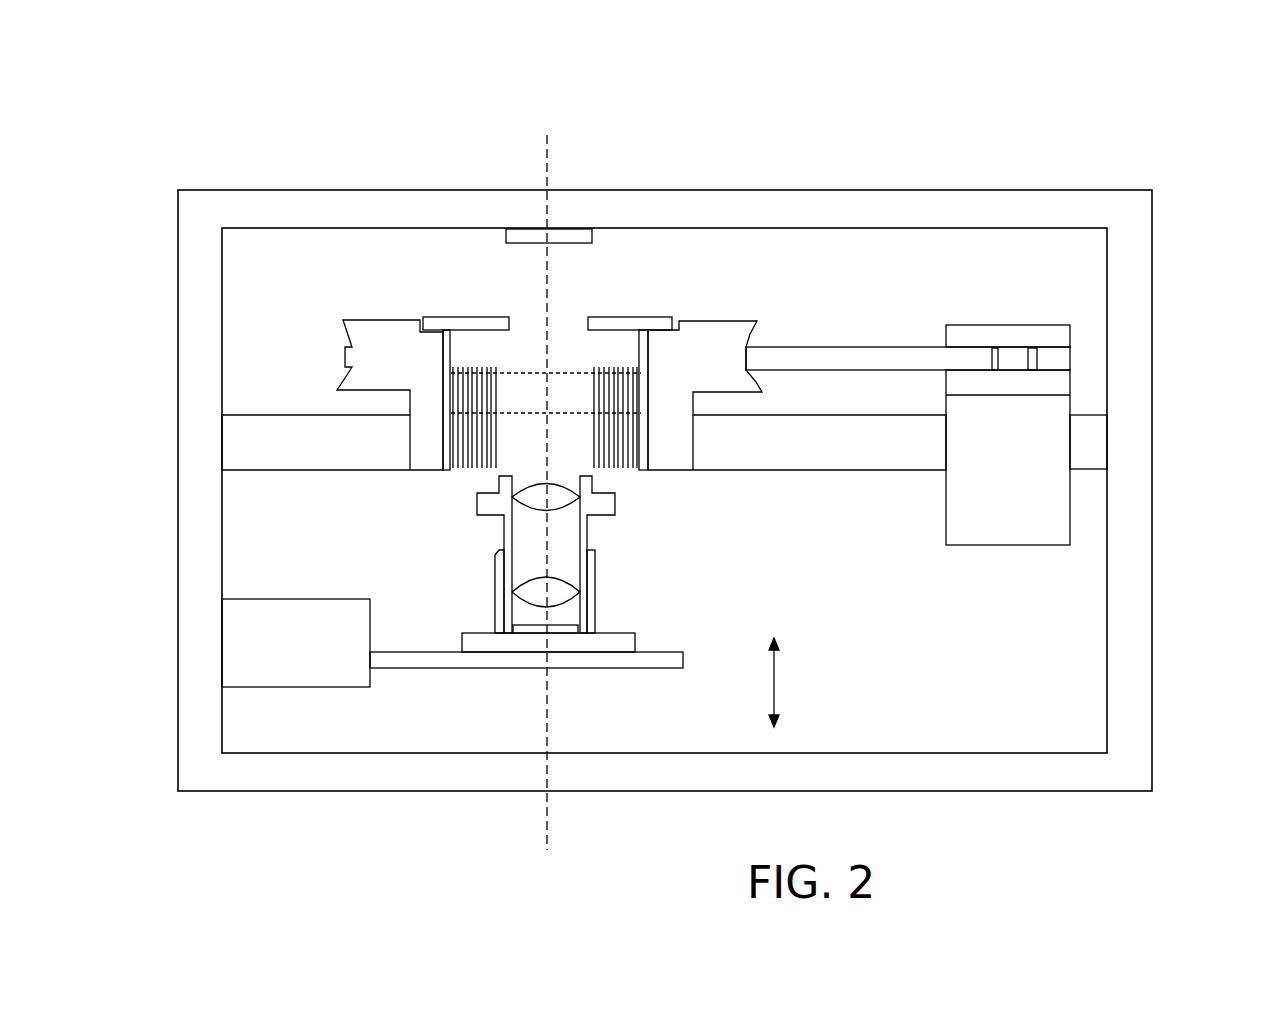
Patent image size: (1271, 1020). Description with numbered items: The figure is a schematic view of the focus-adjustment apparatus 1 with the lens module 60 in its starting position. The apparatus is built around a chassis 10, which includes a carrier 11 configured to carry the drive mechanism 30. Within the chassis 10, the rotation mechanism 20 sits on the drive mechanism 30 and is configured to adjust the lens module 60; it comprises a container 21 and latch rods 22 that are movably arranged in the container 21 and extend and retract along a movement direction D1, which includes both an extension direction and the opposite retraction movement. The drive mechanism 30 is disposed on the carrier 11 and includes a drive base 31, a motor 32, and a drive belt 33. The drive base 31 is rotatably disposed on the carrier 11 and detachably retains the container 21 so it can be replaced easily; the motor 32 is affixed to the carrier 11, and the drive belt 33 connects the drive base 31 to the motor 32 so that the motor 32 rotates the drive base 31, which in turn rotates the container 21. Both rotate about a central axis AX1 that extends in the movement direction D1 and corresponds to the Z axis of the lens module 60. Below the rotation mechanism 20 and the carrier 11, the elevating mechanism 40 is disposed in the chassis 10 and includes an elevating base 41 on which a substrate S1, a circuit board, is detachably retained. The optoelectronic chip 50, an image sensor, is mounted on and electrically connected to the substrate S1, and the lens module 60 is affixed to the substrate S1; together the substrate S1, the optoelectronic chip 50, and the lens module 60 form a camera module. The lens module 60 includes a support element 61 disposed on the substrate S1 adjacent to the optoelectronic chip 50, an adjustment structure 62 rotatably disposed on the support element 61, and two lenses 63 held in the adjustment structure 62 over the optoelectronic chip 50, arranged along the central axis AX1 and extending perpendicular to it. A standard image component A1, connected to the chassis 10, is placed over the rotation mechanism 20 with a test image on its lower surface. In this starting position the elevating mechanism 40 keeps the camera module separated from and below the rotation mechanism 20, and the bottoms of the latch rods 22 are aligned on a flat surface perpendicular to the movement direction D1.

The focus-adjustment apparatus 1 is at (1247, 77).
The chassis 10 is at (200, 196).
The carrier 11 is at (277, 435).
The rotation mechanism 20 is at (525, 271).
The container 21 is at (440, 316).
The latch rods 22 is at (634, 383).
The drive mechanism 30 is at (978, 347).
The drive base 31 is at (718, 342).
The motor 32 is at (1020, 510).
The drive belt 33 is at (840, 359).
The elevating mechanism 40 is at (386, 731).
The elevating base 41 is at (447, 658).
The optoelectronic chip 50 is at (527, 640).
The lens module 60 is at (508, 554).
The support element 61 is at (500, 570).
The adjustment structure 62 is at (487, 507).
The lenses 63 is at (553, 500).
The standard image component A1 is at (522, 232).
The central axis AX1 is at (548, 162).
The movement direction D1 is at (798, 682).
The substrate S1 is at (597, 640).